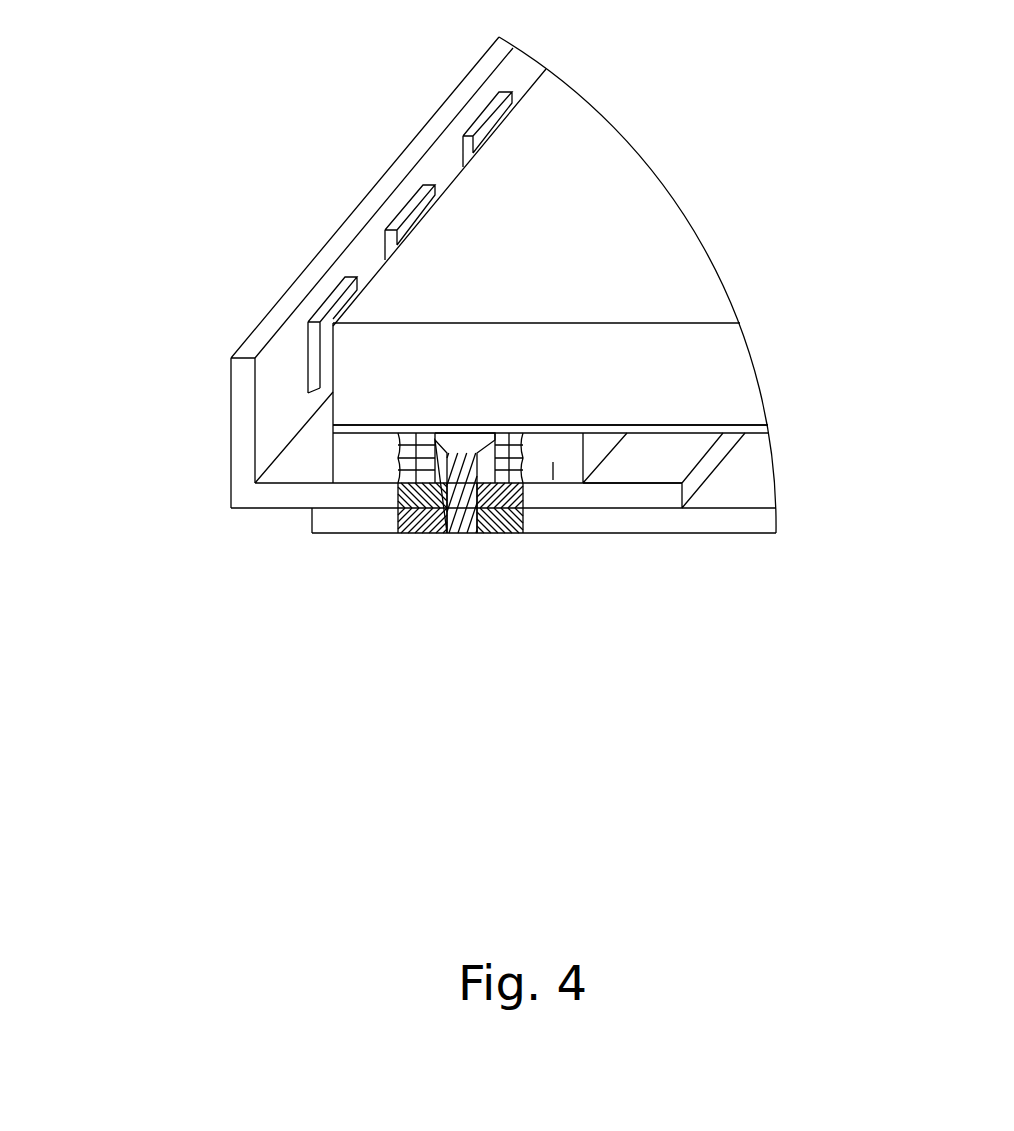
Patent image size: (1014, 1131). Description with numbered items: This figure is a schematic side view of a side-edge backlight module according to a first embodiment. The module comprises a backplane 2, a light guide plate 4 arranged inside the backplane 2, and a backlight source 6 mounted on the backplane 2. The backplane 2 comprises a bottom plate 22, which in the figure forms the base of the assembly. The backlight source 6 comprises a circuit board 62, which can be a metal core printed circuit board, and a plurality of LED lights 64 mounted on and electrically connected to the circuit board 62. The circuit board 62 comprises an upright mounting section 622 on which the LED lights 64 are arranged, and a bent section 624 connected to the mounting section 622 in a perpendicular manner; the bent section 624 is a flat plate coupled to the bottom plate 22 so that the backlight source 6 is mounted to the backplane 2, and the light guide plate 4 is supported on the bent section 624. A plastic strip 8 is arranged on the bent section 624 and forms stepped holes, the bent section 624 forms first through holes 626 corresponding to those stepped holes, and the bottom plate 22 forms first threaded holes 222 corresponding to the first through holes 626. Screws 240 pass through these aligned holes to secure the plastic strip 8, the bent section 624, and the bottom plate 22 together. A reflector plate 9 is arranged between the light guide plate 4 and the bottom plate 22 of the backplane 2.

The backplane 2 is at (742, 522).
The light guide plate 4 is at (532, 217).
The backlight source 6 is at (438, 163).
The plastic strip 8 is at (553, 462).
The reflector plate 9 is at (735, 428).
The bottom plate 22 is at (628, 517).
The circuit board 62 is at (347, 350).
The LED lights 64 is at (327, 322).
The first threaded holes 222 is at (485, 537).
The screws 240 is at (452, 535).
The mounting section 622 is at (240, 405).
The bent section 624 is at (318, 497).
The first through holes 626 is at (418, 507).